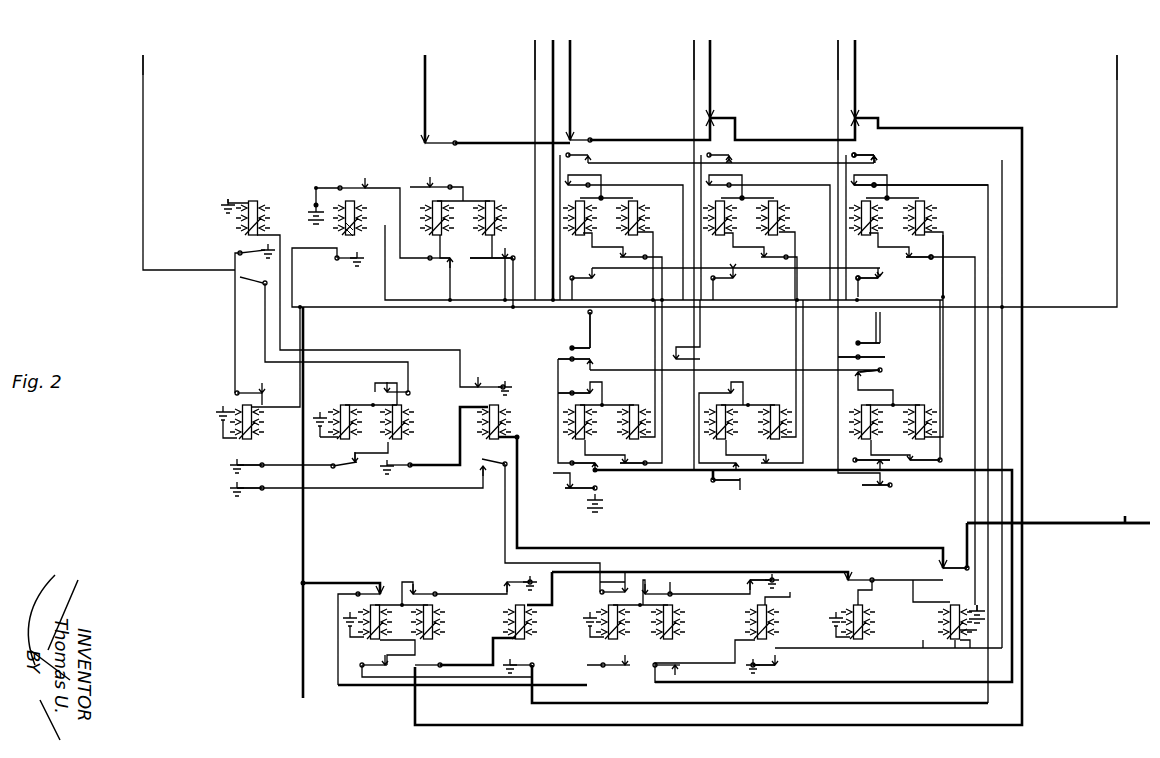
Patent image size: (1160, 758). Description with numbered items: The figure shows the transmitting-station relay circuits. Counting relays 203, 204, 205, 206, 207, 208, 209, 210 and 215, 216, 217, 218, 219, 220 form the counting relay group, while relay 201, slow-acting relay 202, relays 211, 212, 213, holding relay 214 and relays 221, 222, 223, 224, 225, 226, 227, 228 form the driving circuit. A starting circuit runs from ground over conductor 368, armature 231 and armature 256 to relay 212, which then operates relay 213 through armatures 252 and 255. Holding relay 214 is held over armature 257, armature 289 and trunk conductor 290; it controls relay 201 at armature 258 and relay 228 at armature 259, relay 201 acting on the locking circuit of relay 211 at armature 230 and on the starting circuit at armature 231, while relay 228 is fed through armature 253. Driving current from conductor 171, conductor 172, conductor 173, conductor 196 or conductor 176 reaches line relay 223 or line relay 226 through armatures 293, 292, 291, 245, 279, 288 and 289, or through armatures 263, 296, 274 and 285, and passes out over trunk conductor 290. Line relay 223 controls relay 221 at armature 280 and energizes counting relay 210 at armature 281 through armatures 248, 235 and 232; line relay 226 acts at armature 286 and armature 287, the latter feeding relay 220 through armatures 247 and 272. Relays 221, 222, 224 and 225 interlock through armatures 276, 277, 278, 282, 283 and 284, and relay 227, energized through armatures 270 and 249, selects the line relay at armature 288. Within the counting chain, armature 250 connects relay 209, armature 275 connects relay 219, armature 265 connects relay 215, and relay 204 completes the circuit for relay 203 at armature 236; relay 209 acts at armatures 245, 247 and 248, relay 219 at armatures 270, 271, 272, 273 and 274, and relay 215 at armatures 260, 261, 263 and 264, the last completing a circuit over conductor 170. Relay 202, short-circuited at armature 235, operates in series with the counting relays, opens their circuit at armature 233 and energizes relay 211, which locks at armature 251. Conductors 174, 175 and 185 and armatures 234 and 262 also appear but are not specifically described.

The conductor 368 is at (154, 63).
The conductor 196 is at (435, 64).
The conductor 170 is at (535, 63).
The conductor 176 is at (553, 79).
The conductor 175 is at (579, 56).
The conductor 174 is at (694, 63).
The conductor 173 is at (718, 56).
The conductor 172 is at (838, 63).
The conductor 171 is at (863, 54).
The conductor 185 is at (1117, 63).
The armature 293 is at (461, 128).
The armature 292 is at (583, 135).
The armature 291 is at (728, 115).
The armature 245 is at (870, 115).
The armature 247 is at (875, 152).
The armature 248 is at (870, 180).
The armature 232 is at (355, 186).
The contact 234 is at (445, 183).
The relay 201 is at (239, 234).
The slow-acting relay 202 is at (355, 220).
The counting relay 203 is at (442, 230).
The counting relay 204 is at (495, 228).
The counting relay 205 is at (585, 230).
The counting relay 206 is at (638, 228).
The counting relay 207 is at (725, 230).
The counting relay 208 is at (778, 228).
The counting relay 209 is at (871, 230).
The counting relay 210 is at (925, 228).
The armature 230 is at (237, 252).
The armature 231 is at (238, 288).
The armature 233 is at (348, 262).
The armature 235 is at (440, 262).
The armature 236 is at (490, 262).
The armature 249 is at (879, 264).
The armature 250 is at (925, 252).
The armature 260 is at (588, 344).
The armature 261 is at (594, 357).
The contact 262 is at (580, 379).
The armature 270 is at (878, 340).
The armature 271 is at (882, 355).
The armature 272 is at (882, 370).
The armature 251 is at (252, 390).
The armature 256 is at (405, 390).
The armature 258 is at (496, 374).
The relay 211 is at (261, 422).
The relay 212 is at (340, 402).
The relay 213 is at (402, 430).
The holding relay 214 is at (499, 430).
The counting relay 215 is at (585, 434).
The counting relay 216 is at (630, 398).
The counting relay 217 is at (726, 434).
The counting relay 218 is at (770, 398).
The counting relay 219 is at (871, 434).
The counting relay 220 is at (915, 398).
The armature 252 is at (253, 454).
The armature 253 is at (255, 477).
The armature 255 is at (357, 470).
The armature 257 is at (398, 462).
The armature 259 is at (478, 470).
The armature 263 is at (575, 460).
The armature 264 is at (575, 492).
The armature 265 is at (630, 466).
The armature 296 is at (730, 484).
The armature 273 is at (862, 457).
The armature 274 is at (872, 490).
The armature 275 is at (923, 451).
The armature 276 is at (370, 590).
The armature 278 is at (425, 590).
The armature 280 is at (513, 578).
The armature 282 is at (610, 588).
The armature 284 is at (672, 584).
The armature 286 is at (765, 576).
The armature 288 is at (872, 571).
The armature 289 is at (952, 562).
The trunk conductor 290 is at (1125, 516).
The relay 221 is at (389, 622).
The relay 222 is at (433, 628).
The line relay 223 is at (525, 630).
The relay 224 is at (618, 630).
The relay 225 is at (673, 628).
The line relay 226 is at (767, 630).
The relay 227 is at (863, 630).
The relay 228 is at (948, 630).
The armature 277 is at (374, 655).
The armature 279 is at (431, 655).
The armature 281 is at (525, 655).
The armature 283 is at (615, 669).
The armature 285 is at (671, 655).
The armature 287 is at (775, 662).